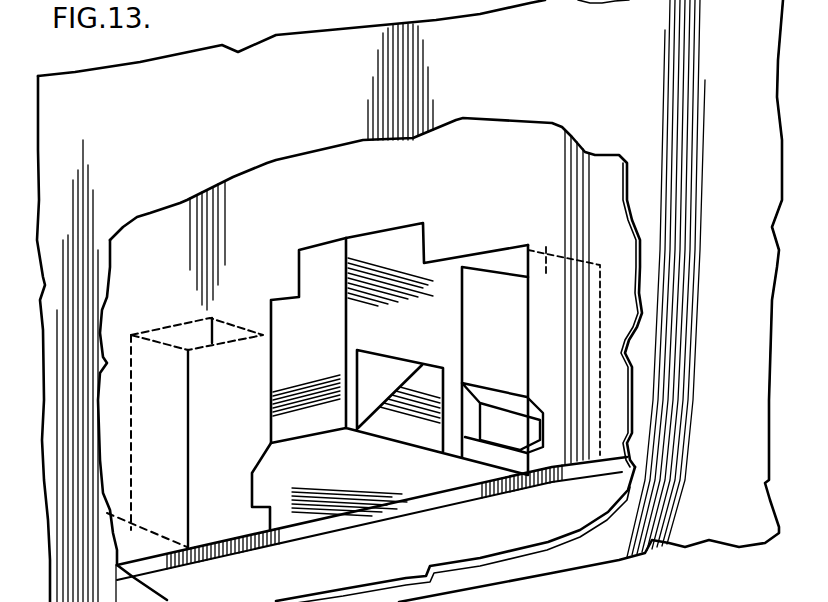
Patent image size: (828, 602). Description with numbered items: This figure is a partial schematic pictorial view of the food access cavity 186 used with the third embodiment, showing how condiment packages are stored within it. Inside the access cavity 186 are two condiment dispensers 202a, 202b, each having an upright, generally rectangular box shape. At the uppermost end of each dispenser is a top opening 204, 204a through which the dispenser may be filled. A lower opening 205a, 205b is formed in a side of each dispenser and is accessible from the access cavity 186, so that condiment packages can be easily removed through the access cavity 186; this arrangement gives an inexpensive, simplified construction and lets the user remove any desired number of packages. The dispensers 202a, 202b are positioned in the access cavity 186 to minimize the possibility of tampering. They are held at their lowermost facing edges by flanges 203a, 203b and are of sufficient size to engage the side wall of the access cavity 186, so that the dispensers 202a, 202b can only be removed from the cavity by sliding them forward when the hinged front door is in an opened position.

The access cavity 186 is at (396, 250).
The condiment dispenser 202a is at (469, 305).
The condiment dispenser 202b is at (267, 370).
The flange 203a is at (476, 470).
The flange 203b is at (273, 530).
The top opening 204 is at (699, 601).
The top opening 204a is at (507, 262).
The lower opening 205a is at (487, 417).
The lower opening 205b is at (257, 493).